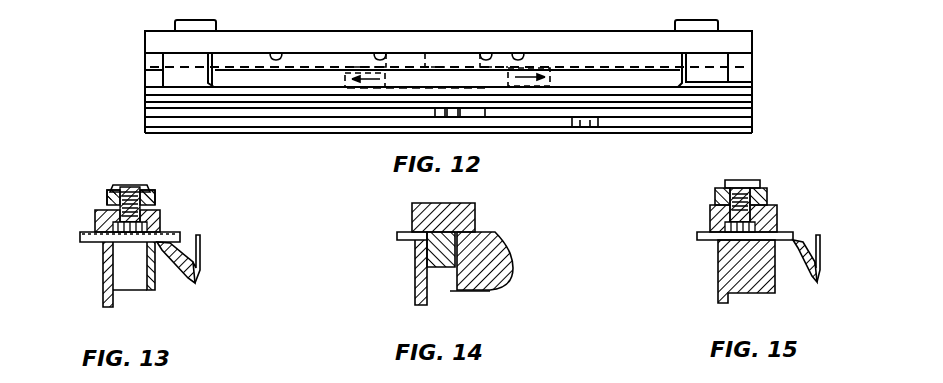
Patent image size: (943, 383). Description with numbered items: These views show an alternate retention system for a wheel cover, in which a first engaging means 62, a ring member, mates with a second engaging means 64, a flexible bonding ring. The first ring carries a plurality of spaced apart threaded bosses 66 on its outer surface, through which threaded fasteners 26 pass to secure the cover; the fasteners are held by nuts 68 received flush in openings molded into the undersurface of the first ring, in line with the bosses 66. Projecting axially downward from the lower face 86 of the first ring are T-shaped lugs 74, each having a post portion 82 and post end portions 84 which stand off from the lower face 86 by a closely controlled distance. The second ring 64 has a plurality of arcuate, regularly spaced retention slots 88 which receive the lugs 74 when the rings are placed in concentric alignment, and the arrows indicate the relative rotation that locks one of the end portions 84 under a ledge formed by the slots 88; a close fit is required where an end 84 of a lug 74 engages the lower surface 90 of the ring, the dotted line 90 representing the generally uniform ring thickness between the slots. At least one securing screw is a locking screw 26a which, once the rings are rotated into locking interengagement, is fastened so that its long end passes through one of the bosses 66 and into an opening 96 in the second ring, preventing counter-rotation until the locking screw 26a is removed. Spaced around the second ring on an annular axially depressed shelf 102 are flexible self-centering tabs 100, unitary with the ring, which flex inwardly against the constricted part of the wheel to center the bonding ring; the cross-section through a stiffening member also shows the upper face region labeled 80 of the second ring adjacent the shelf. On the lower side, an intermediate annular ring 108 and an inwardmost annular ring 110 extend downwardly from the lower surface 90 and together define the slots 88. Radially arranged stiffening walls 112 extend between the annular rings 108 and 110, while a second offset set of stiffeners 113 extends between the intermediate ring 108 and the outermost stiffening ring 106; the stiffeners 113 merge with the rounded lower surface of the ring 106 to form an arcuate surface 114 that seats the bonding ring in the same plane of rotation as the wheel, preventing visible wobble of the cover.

In FIG. 15, the threaded fastener 26 is at (755, 180).
In FIG. 13, the locking screw 26a is at (138, 185).
In FIG. 12, the first engaging means 62 is at (755, 42).
In FIG. 13, the first engaging means 62 is at (160, 206).
In FIG. 14, the first engaging means 62 is at (476, 215).
In FIG. 13, the second engaging means 64 is at (82, 238).
In FIG. 14, the second engaging means 64 is at (396, 237).
In FIG. 13, the threaded boss 66 is at (106, 196).
In FIG. 13, the nut 68 is at (162, 232).
In FIG. 15, the nut 68 is at (776, 218).
In FIG. 12, the T-shaped lug 74 is at (388, 135).
In FIG. 14, the T-shaped lug 74 is at (465, 296).
In FIG. 15, the flange 80 is at (698, 238).
In FIG. 12, the post portion 82 is at (484, 57).
In FIG. 12, the post end portion 84 is at (388, 140).
In FIG. 12, the lower face 86 is at (281, 57).
In FIG. 12, the retention slot 88 is at (382, 55).
In FIG. 12, the lower surface 90 is at (653, 67).
In FIG. 13, the opening 96 is at (110, 255).
In FIG. 14, the opening 96 is at (418, 258).
In FIG. 13, the self-centering tab 100 is at (202, 254).
In FIG. 15, the self-centering tab 100 is at (821, 252).
In FIG. 13, the annular shelf 102 is at (186, 242).
In FIG. 14, the annular shelf 102 is at (508, 258).
In FIG. 15, the annular shelf 102 is at (804, 240).
In FIG. 15, the outermost stiffening ring 106 is at (816, 280).
In FIG. 13, the intermediate annular ring 108 is at (150, 288).
In FIG. 15, the intermediate annular ring 108 is at (776, 286).
In FIG. 14, the inwardmost annular ring 110 is at (430, 298).
In FIG. 15, the inwardmost annular ring 110 is at (722, 288).
In FIG. 15, the stiffening wall 112 is at (722, 256).
In FIG. 14, the stiffener 113 is at (485, 236).
In FIG. 14, the arcuate surface 114 is at (505, 276).